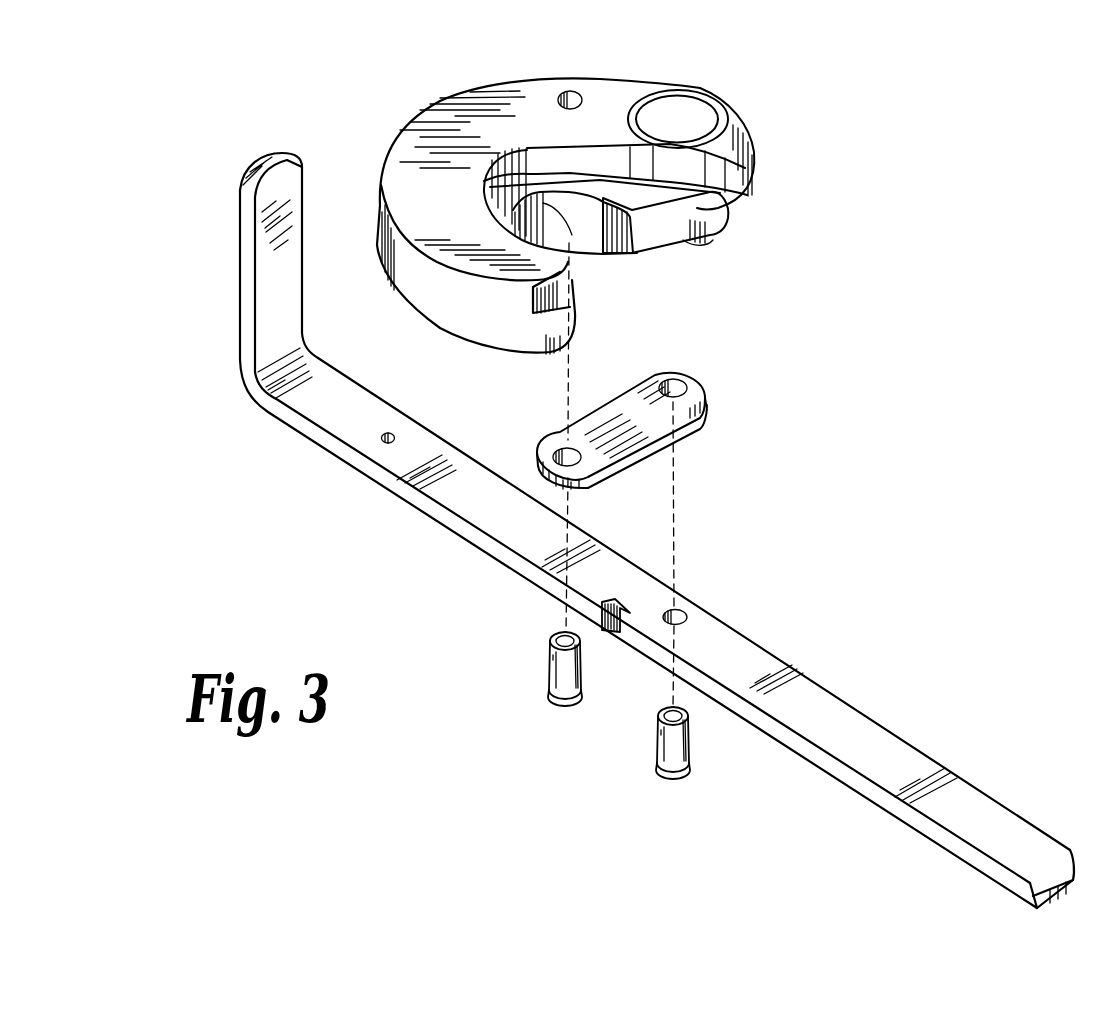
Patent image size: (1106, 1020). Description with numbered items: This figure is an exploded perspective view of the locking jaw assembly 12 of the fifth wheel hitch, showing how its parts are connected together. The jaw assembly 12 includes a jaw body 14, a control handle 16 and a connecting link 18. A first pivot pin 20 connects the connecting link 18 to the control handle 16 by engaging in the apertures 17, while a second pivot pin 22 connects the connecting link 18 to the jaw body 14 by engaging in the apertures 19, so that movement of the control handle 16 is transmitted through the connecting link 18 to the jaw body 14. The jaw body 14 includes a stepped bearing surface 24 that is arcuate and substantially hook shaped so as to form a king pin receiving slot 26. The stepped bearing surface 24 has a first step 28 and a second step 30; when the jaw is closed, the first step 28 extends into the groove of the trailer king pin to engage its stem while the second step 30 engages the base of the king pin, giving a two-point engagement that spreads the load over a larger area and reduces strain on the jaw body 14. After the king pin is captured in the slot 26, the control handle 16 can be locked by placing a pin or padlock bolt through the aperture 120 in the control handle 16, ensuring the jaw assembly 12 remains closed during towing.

The locking jaw assembly 12 is at (897, 198).
The jaw body 14 is at (470, 90).
The control handle 16 is at (437, 512).
The apertures 17 is at (680, 612).
The connecting link 18 is at (637, 383).
The apertures 19 is at (555, 448).
The first pivot pin 20 is at (684, 742).
The second pivot pin 22 is at (552, 670).
The stepped bearing surface 24 is at (740, 228).
The king pin receiving slot 26 is at (627, 279).
The first step 28 is at (557, 207).
The second step 30 is at (522, 156).
The aperture 120 is at (381, 438).